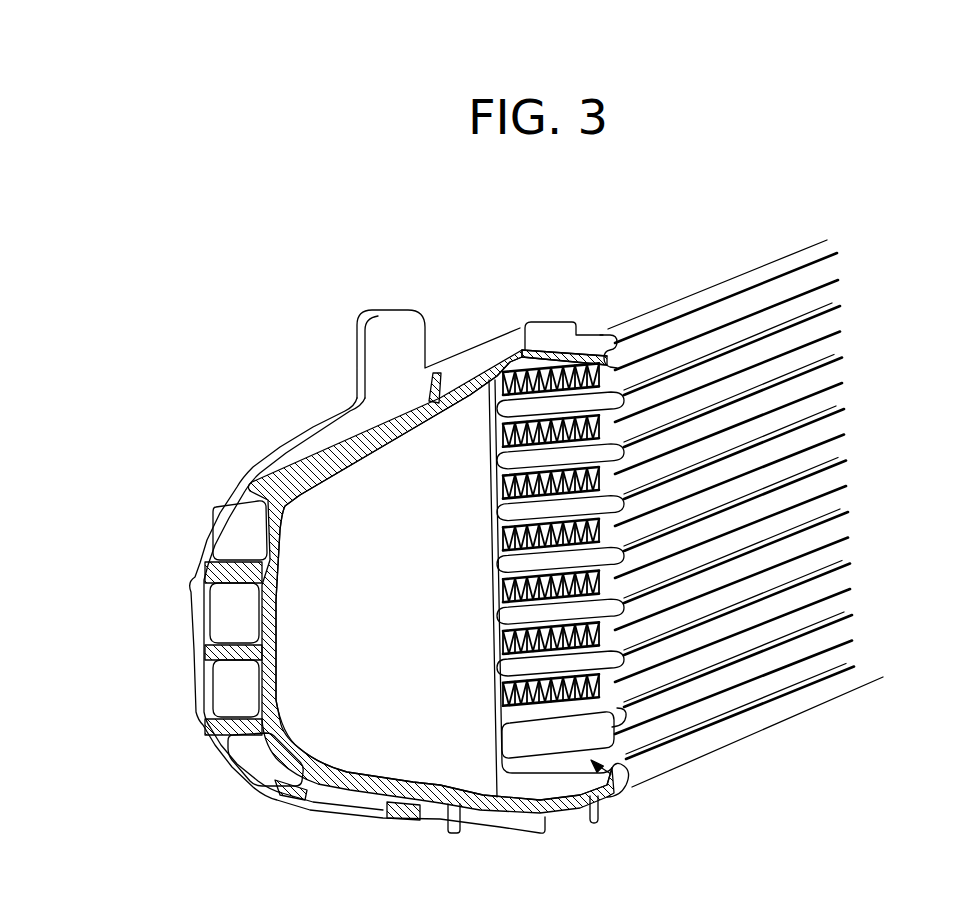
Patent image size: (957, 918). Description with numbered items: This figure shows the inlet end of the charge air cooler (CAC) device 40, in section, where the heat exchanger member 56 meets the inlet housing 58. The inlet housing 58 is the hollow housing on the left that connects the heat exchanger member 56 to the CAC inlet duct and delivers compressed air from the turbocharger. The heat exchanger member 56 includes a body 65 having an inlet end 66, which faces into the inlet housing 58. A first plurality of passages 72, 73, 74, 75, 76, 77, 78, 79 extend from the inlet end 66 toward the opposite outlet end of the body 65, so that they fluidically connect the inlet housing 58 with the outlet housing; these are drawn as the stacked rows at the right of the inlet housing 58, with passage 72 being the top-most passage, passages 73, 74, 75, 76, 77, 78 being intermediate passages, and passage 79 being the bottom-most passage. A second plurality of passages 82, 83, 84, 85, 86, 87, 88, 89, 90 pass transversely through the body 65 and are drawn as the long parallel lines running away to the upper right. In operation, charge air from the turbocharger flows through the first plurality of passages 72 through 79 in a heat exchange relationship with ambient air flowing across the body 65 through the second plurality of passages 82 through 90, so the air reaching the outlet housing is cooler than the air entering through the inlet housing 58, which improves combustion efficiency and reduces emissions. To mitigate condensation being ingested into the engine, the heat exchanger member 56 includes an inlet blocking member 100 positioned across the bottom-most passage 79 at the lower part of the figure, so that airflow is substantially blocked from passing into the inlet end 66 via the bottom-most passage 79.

The charge air cooler (CAC) device 40 is at (814, 773).
The heat exchanger member 56 is at (845, 730).
The inlet housing 58 is at (279, 434).
The body 65 is at (641, 304).
The inlet end 66 is at (468, 574).
The passage 72 is at (625, 368).
The passage 73 is at (604, 450).
The passage 74 is at (604, 502).
The passage 75 is at (604, 553).
The passage 76 is at (604, 605).
The passage 77 is at (604, 657).
The passage 78 is at (604, 708).
The passage 79 is at (628, 752).
The passage 82 is at (797, 288).
The passage 83 is at (822, 327).
The passage 84 is at (823, 378).
The passage 85 is at (825, 430).
The passage 86 is at (832, 477).
The passage 87 is at (833, 532).
The passage 88 is at (835, 580).
The passage 89 is at (845, 630).
The passage 90 is at (850, 680).
The inlet blocking member 100 is at (628, 792).